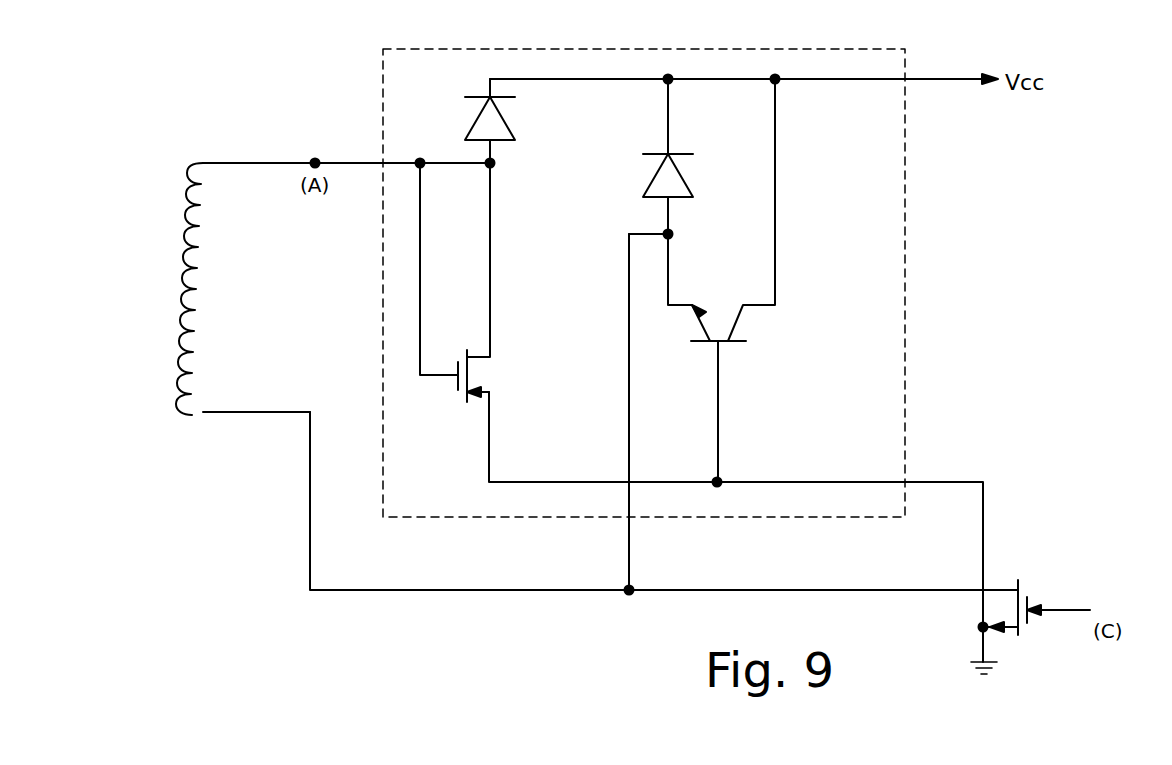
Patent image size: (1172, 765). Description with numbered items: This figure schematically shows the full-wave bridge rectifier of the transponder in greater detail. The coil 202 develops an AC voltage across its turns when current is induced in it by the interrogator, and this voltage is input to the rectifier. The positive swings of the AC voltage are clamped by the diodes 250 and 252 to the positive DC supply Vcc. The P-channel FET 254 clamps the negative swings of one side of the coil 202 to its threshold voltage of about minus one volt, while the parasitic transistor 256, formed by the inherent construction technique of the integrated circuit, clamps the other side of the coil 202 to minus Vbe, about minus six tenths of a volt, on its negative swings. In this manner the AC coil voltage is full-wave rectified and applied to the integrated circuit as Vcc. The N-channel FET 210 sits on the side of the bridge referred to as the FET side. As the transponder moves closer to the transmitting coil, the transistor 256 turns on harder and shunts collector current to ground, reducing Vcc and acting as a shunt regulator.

The coil 202 is at (198, 225).
The diode 250 is at (517, 117).
The diode 252 is at (648, 202).
The P-channel FET 254 is at (458, 402).
The parasitic transistor 256 is at (738, 325).
The N-channel FET 210 is at (1026, 642).